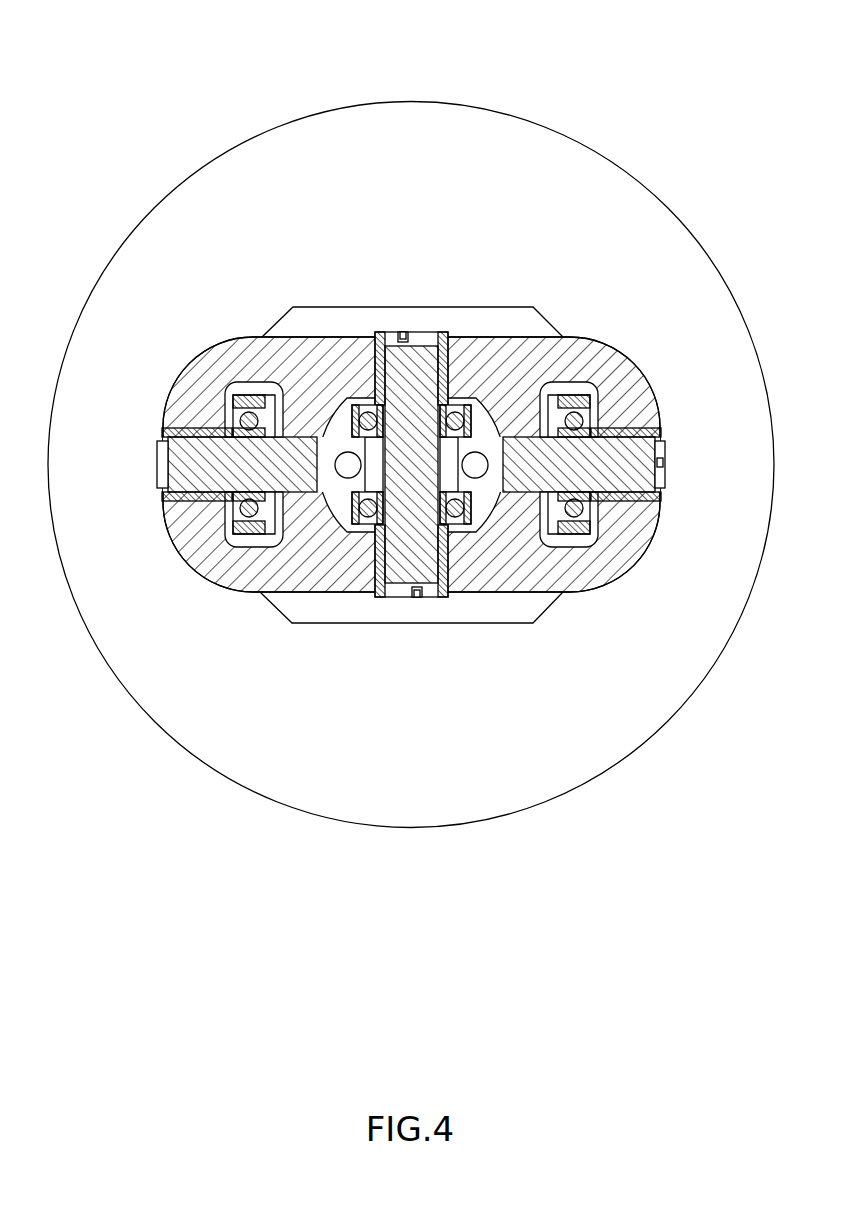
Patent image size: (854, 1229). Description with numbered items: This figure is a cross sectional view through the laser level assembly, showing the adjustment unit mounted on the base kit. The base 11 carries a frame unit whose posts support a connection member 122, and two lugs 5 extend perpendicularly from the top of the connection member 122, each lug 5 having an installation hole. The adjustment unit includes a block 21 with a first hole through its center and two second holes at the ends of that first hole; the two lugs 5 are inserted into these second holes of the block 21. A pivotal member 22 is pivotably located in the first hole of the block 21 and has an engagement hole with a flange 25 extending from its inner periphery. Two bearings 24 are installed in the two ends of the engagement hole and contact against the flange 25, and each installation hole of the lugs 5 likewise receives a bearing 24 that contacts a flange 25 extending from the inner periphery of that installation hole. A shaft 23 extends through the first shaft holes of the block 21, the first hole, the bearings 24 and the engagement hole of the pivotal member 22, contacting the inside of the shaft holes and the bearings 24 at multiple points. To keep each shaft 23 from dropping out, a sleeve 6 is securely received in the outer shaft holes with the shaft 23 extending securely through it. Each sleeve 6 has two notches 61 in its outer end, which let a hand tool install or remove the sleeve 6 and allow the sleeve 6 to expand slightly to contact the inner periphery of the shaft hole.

The base 11 is at (450, 132).
The connection member 122 is at (507, 318).
The block 21 is at (600, 578).
The pivotal member 22 is at (498, 410).
The shaft 23 is at (200, 436).
The bearing 24 is at (414, 392).
The flange 25 is at (282, 392).
The lug 5 is at (246, 397).
The sleeve 6 is at (188, 499).
The notch 61 is at (403, 333).